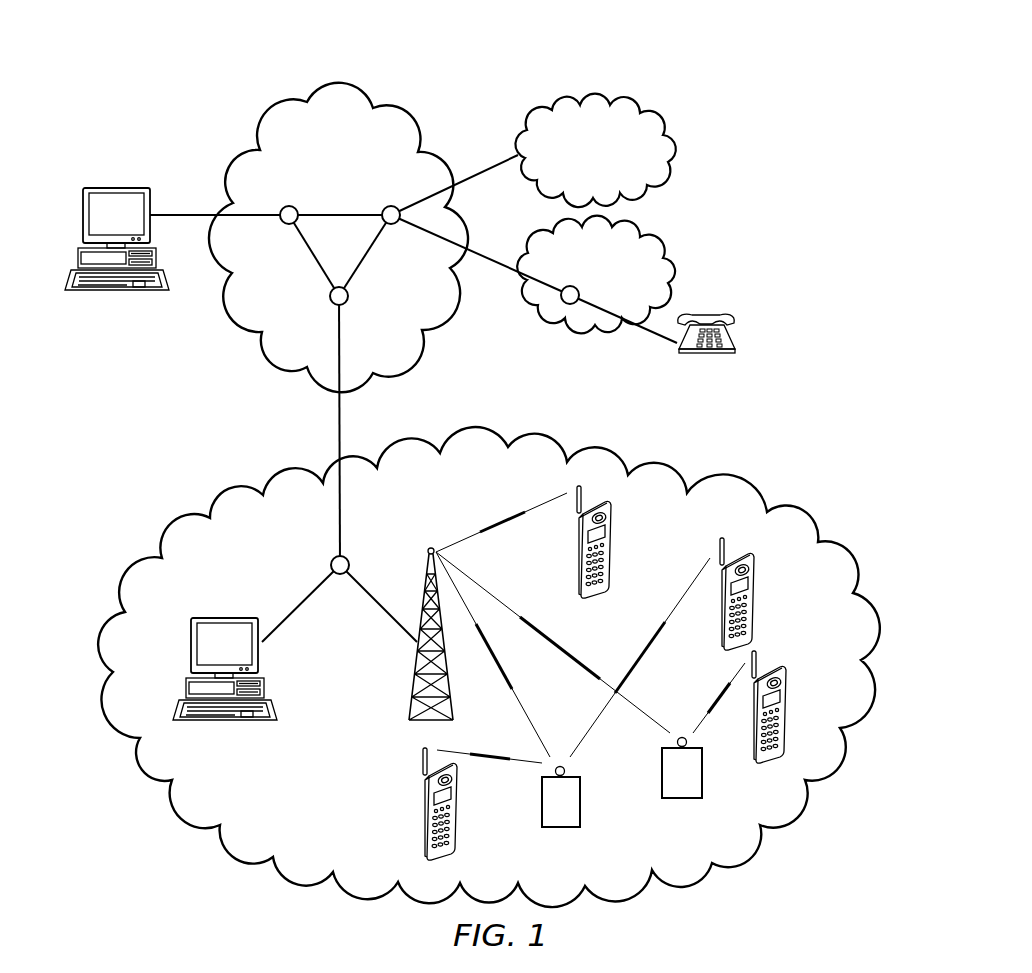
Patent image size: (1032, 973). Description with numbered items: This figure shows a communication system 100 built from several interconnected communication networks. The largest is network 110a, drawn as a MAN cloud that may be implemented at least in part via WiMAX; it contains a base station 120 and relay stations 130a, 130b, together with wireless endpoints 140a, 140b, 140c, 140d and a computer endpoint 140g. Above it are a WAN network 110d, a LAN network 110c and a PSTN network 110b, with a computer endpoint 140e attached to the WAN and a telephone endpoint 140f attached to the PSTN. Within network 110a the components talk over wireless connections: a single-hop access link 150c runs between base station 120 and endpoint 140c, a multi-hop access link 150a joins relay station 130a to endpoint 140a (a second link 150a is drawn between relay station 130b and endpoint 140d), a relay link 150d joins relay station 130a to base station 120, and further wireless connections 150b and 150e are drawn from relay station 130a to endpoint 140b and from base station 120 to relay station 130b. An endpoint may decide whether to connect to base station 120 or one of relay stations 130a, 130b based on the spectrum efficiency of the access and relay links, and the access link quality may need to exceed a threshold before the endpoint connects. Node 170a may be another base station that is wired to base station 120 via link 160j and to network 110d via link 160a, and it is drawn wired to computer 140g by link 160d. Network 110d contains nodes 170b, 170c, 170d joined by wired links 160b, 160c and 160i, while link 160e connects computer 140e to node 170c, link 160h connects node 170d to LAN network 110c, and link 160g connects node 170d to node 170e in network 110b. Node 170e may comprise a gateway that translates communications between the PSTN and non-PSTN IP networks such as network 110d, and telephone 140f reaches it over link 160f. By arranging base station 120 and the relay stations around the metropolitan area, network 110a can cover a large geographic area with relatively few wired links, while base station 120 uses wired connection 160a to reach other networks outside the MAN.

The communication system 100 is at (641, 61).
The network (MAN) 110a is at (229, 491).
The network (PSTN) 110b is at (551, 331).
The network (LAN) 110c is at (675, 151).
The network (WAN) 110d is at (263, 111).
The base station 120 is at (412, 686).
The relay station 130a is at (560, 828).
The relay station 130b is at (682, 799).
The endpoint 140a is at (420, 812).
The endpoint 140b is at (758, 585).
The endpoint 140c is at (616, 534).
The endpoint 140d is at (790, 696).
The endpoint 140e is at (117, 187).
The endpoint 140f is at (700, 312).
The endpoint 140g is at (228, 617).
The wireless connection (multi-hop access link) 150a is at (719, 697).
The wireless connection 150b is at (674, 609).
The wireless connection (single-hop access link) 150c is at (481, 530).
The wireless connection (relay link) 150d is at (514, 693).
The wireless connection 150e is at (645, 715).
The wired link 160a is at (342, 520).
The wired link 160b is at (314, 258).
The wired link 160c is at (369, 251).
The wired link 160d is at (307, 600).
The wired link 160e is at (200, 213).
The wired link 160f is at (650, 333).
The wired link 160g is at (486, 256).
The wired link 160h is at (481, 171).
The wired link 160i is at (350, 214).
The wired link 160j is at (379, 602).
The node 170a is at (330, 562).
The node 170b is at (348, 301).
The node 170c is at (287, 206).
The node 170d is at (392, 206).
The node (gateway) 170e is at (570, 286).